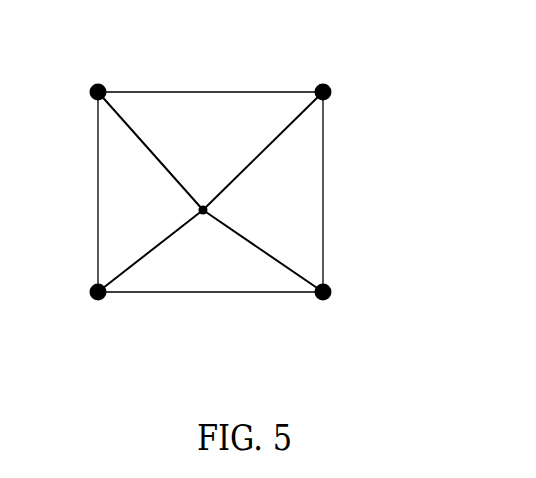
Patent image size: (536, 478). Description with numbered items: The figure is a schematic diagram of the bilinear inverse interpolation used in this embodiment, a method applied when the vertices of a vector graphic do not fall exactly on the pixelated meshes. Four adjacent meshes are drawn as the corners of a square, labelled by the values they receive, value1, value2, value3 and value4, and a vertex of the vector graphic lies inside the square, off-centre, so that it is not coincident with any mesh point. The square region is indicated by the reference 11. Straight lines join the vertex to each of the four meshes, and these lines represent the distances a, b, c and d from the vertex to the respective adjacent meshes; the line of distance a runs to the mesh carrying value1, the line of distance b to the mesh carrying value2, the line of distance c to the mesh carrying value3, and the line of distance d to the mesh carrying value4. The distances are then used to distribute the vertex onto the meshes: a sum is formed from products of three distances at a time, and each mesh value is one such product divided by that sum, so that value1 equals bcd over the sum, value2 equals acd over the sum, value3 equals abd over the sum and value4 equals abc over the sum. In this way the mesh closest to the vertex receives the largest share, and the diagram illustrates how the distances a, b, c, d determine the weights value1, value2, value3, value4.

The interpolation unit cell (square of four sample points) 11 is at (241, 194).
The distance a is at (150, 151).
The distance b is at (263, 151).
The distance c is at (150, 251).
The distance d is at (263, 251).
The mesh value value1 is at (108, 70).
The mesh value value2 is at (337, 70).
The mesh value value3 is at (104, 315).
The mesh value value4 is at (331, 317).